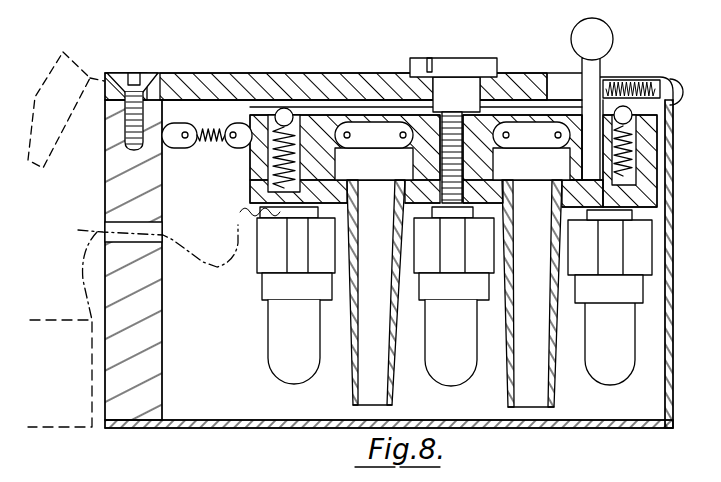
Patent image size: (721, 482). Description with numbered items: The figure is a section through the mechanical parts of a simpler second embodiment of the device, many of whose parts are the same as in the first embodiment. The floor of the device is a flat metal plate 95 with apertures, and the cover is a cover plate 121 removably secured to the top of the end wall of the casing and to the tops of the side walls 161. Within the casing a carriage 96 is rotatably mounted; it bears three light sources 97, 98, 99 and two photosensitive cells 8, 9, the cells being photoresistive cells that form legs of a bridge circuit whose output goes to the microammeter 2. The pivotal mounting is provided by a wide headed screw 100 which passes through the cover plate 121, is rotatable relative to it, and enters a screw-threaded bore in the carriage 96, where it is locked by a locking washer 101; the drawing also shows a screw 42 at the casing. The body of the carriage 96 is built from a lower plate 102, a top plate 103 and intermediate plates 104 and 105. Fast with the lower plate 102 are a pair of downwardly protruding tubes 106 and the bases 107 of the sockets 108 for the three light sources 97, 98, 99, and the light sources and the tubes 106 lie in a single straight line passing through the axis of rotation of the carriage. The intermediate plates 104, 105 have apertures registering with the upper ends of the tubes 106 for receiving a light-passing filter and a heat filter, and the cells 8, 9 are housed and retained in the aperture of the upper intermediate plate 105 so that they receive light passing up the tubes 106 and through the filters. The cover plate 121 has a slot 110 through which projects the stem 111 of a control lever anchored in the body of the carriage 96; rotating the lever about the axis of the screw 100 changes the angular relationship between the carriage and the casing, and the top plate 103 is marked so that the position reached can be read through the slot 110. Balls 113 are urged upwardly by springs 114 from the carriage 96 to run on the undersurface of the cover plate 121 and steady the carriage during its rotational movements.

The microammeter 2 is at (88, 74).
The photosensitive cell 8 is at (367, 137).
The photosensitive cell 9 is at (513, 137).
The fastening screw 42 is at (203, 128).
The flat metal plate 95 is at (590, 423).
The carriage 96 is at (480, 114).
The light source 97 is at (668, 97).
The light source 98 is at (438, 360).
The light source 99 is at (298, 357).
The wide headed screw 100 is at (453, 100).
The locking washer 101 is at (430, 68).
The lower plate 102 is at (600, 203).
The top plate 103 is at (650, 122).
The intermediate plate 104 is at (632, 178).
The intermediate plate 105 is at (645, 152).
The tube 106 is at (377, 335).
The socket base 107 is at (598, 213).
The socket 108 is at (452, 248).
The slot 110 is at (553, 102).
The stem 111 is at (586, 88).
The ball 113 is at (630, 88).
The spring 114 is at (256, 112).
The cover plate 121 is at (282, 110).
The side wall 161 is at (665, 240).